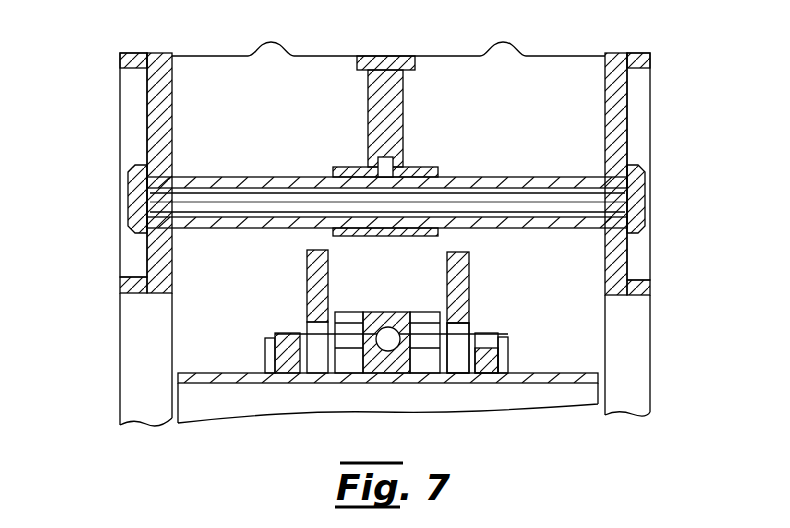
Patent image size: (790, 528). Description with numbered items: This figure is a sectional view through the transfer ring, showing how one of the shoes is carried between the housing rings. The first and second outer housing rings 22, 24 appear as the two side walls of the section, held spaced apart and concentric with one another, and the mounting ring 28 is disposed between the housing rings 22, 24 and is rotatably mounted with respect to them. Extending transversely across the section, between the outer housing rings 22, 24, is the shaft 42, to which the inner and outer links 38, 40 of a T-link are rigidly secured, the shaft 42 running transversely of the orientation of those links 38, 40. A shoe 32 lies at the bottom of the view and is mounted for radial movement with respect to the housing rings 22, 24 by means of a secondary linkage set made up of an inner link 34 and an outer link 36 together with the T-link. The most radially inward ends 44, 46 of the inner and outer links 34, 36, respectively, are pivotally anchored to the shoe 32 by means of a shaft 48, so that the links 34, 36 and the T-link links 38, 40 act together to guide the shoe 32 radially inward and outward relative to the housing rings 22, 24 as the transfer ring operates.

The first outer housing ring 22 is at (147, 91).
The second outer housing ring 24 is at (652, 97).
The mounting ring 28 is at (368, 92).
The shoe 32 is at (512, 400).
The inner link 34 is at (307, 269).
The outer link 36 is at (470, 265).
The inner link of T-link 38 is at (348, 311).
The outer link of T-link 40 is at (423, 311).
The shaft 42 is at (466, 177).
The radially inward end of inner link 44 is at (312, 338).
The radially inward end of outer link 46 is at (460, 338).
The shaft 48 is at (505, 348).